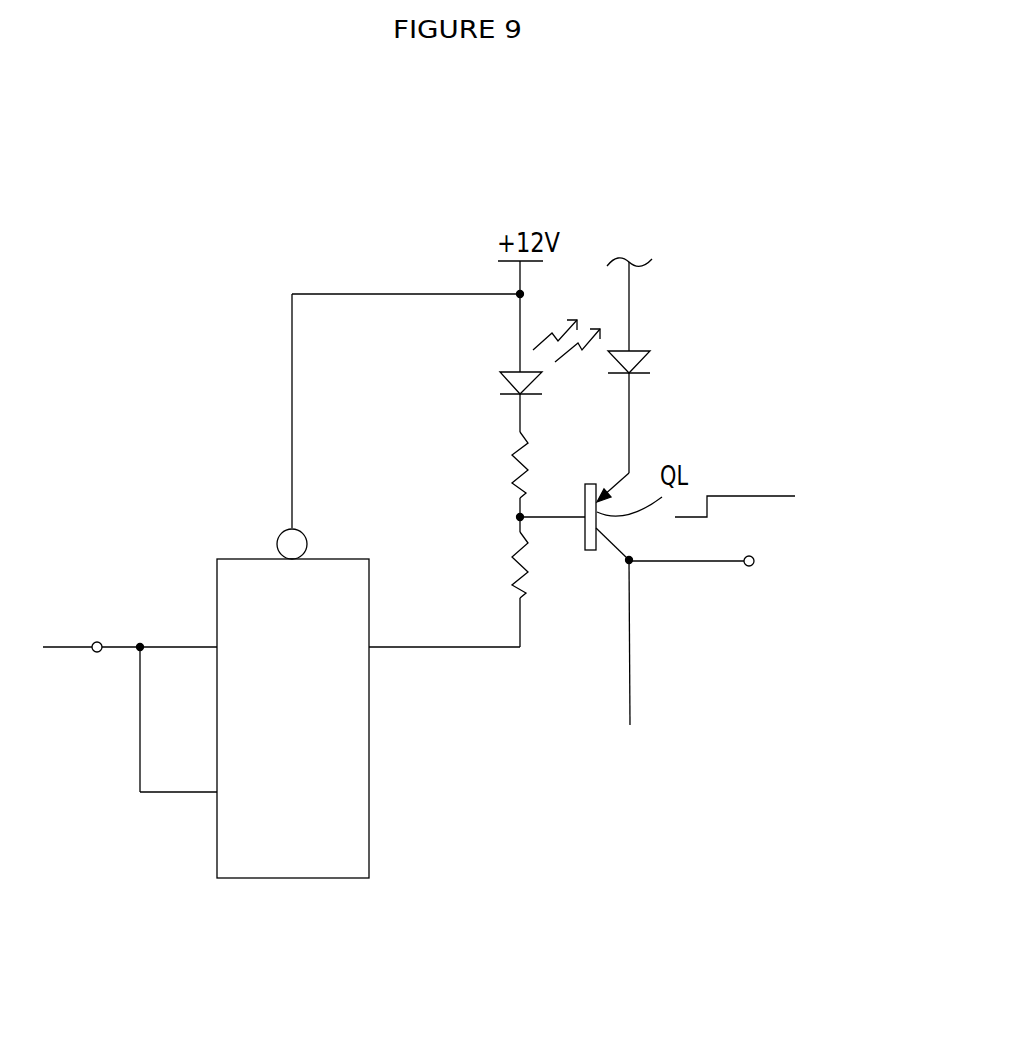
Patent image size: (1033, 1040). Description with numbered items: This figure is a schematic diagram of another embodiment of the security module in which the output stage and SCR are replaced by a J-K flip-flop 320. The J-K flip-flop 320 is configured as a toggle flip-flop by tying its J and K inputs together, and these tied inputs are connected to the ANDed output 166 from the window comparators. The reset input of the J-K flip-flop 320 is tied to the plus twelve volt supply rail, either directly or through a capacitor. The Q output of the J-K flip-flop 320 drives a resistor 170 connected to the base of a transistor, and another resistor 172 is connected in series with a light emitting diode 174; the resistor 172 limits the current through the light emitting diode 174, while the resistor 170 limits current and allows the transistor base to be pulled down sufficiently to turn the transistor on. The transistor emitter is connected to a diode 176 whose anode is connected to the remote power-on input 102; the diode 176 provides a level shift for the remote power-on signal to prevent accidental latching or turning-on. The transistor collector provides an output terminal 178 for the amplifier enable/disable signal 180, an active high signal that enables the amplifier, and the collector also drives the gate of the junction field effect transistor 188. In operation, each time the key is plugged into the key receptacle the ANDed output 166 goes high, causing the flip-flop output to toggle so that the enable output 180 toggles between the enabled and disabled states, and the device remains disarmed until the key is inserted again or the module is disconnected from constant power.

The J-K flip-flop 320 is at (234, 558).
The ANDed output 166 is at (65, 645).
The light emitting diode 174 is at (508, 385).
The resistor 172 is at (522, 483).
The resistor 170 is at (517, 582).
The remote power-on input 102 is at (630, 321).
The diode 176 is at (631, 376).
The amplifier enable/disable signal 180 is at (735, 494).
The output terminal 178 is at (751, 567).
The junction field effect transistor 188 is at (678, 669).